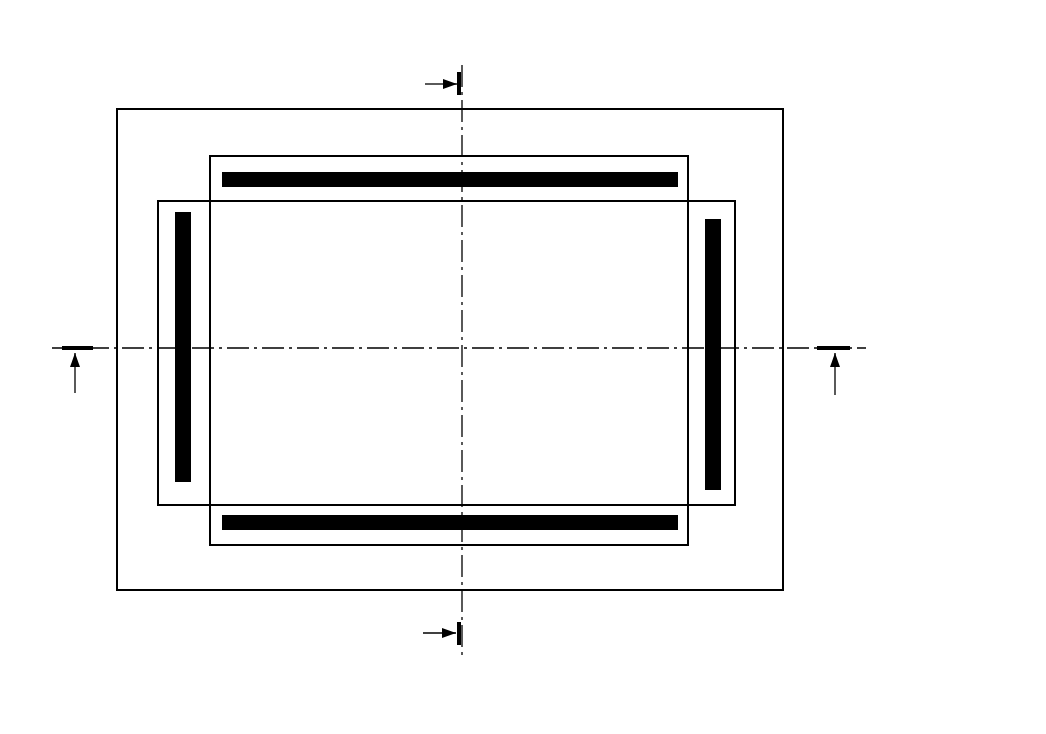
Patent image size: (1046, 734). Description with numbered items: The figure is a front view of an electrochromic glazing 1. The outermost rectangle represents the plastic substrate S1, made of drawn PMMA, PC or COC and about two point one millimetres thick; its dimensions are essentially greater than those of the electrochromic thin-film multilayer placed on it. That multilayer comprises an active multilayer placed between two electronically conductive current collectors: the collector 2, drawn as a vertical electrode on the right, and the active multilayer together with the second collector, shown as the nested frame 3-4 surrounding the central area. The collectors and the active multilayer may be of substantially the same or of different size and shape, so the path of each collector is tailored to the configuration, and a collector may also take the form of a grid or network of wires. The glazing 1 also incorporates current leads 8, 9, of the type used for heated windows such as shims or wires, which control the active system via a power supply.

The electrochromic glazing 1 is at (113, 89).
The plastic substrate S1 is at (785, 127).
The current lead 8 is at (641, 159).
The active multilayer and current collector 3-4 is at (692, 186).
The current collector 2 is at (737, 447).
The current lead 9 is at (727, 488).